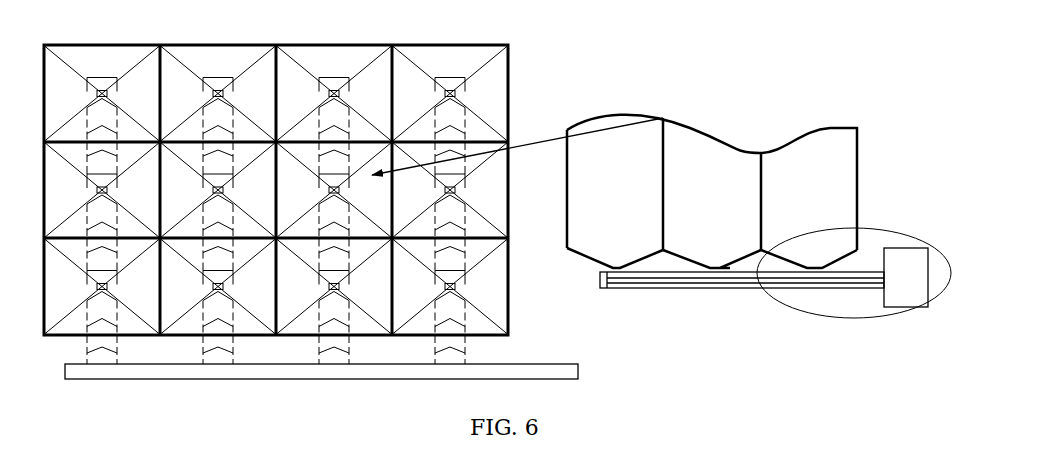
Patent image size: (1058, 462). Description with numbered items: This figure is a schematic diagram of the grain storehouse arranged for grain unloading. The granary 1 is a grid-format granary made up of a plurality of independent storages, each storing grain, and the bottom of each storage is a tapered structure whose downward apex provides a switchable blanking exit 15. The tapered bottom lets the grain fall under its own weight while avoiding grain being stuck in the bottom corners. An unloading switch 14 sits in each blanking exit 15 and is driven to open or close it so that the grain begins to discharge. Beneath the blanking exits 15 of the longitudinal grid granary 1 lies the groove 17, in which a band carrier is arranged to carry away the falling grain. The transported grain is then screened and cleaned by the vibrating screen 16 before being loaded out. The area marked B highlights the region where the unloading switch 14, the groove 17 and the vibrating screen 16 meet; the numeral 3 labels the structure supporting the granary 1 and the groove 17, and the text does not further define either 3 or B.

The granary 1 is at (632, 188).
The support frame 3 is at (465, 315).
The unloading switch 14 is at (828, 262).
The blanking exit 15 is at (455, 92).
The vibrating screen 16 is at (896, 282).
The groove 17 is at (686, 279).
The enlarged detail region B is at (866, 319).